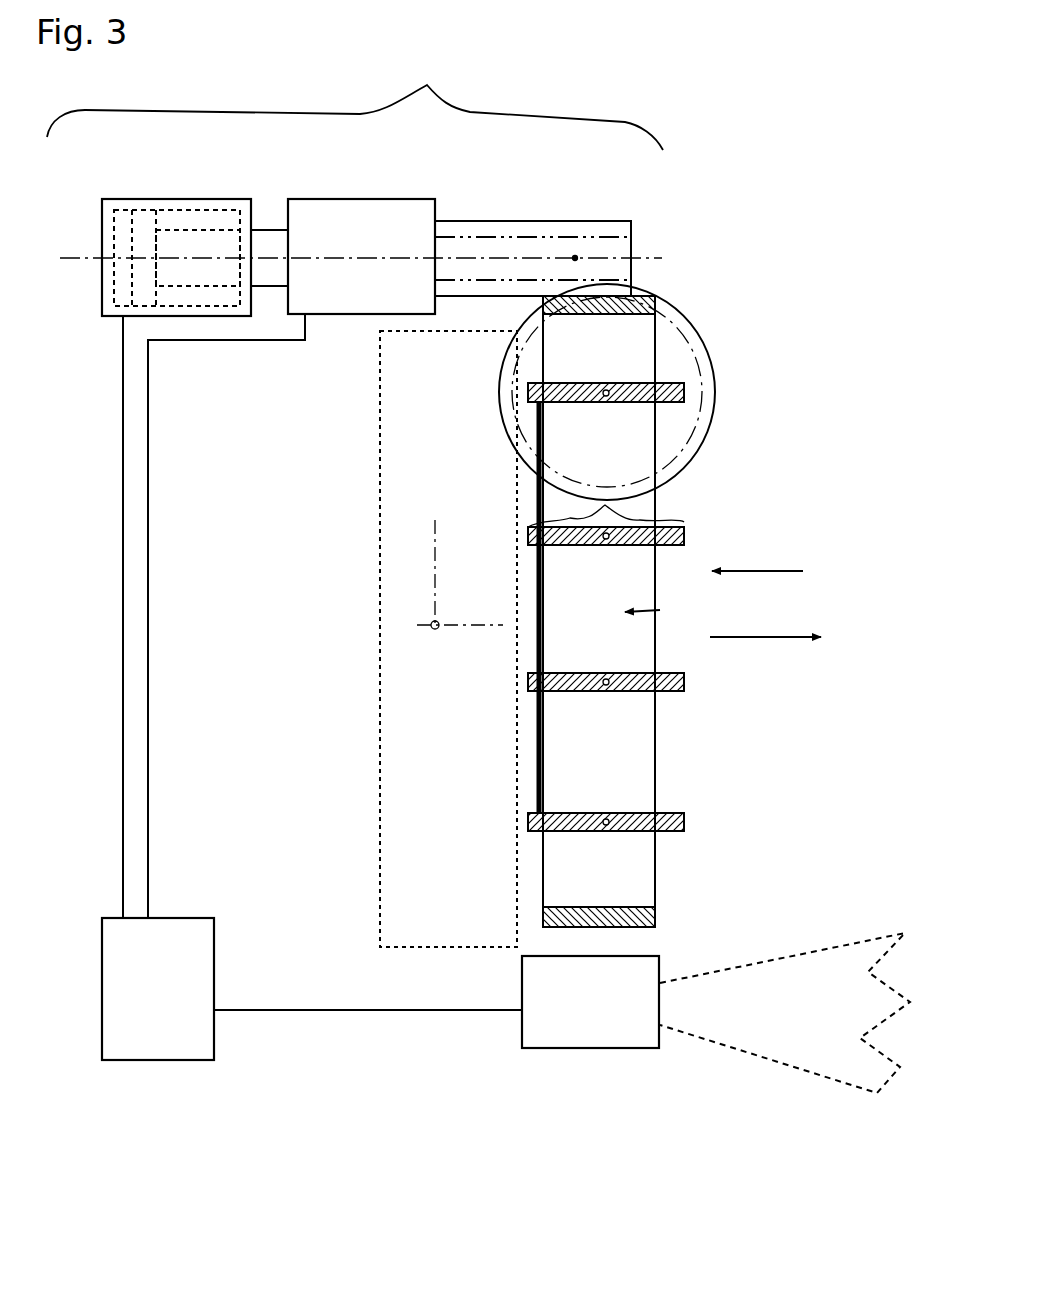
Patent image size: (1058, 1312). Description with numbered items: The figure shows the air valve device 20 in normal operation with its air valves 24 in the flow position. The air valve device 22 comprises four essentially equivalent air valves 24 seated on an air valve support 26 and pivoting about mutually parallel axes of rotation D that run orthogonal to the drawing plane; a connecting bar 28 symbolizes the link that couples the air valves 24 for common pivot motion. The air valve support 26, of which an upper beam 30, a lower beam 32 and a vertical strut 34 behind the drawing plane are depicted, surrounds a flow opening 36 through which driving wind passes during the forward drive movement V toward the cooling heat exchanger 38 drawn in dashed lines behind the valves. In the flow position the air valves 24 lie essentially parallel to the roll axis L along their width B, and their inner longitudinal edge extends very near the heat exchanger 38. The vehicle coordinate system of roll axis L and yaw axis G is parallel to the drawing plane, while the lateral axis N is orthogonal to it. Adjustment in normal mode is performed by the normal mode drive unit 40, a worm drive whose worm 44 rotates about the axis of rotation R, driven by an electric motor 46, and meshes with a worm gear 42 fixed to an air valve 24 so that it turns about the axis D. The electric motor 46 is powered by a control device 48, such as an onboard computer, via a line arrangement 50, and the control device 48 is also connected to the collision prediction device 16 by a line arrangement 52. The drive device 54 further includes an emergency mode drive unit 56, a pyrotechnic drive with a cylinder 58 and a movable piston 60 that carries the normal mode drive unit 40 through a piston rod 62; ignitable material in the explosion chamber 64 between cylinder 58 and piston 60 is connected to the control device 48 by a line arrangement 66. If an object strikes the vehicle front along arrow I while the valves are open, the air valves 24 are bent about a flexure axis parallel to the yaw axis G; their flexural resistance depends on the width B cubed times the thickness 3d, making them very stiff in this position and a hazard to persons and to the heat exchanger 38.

The collision prediction device 16 is at (604, 1023).
The air valve device 20 is at (416, 1136).
The air valve device 22 is at (695, 825).
The air valves 24 is at (568, 392).
The air valve support 26 is at (700, 522).
The connecting bar 28 is at (533, 598).
The upper beam 30 is at (640, 300).
The lower beam 32 is at (645, 912).
The vertical strut 34 is at (612, 784).
The flow opening 36 is at (661, 612).
The cooling heat exchanger 38 is at (385, 624).
The normal mode drive unit 40 is at (466, 206).
The worm gear 42 is at (680, 333).
The worm 44 is at (532, 247).
The electric motor 46 is at (378, 250).
The control device 48 is at (170, 1010).
The line arrangement 50 is at (150, 650).
The line arrangement 52 is at (328, 1013).
The drive device 54 is at (355, 100).
The emergency mode drive unit 56 is at (209, 196).
The cylinder 58 is at (102, 200).
The piston 60 is at (140, 230).
The piston rod 62 is at (262, 245).
The explosion chamber 64 is at (120, 290).
The line arrangement 66 is at (122, 605).
The thickness 3d is at (624, 684).
The axis of rotation R is at (575, 258).
The axis of rotation D is at (606, 393).
The width dimension B is at (606, 496).
The yaw axis G is at (437, 536).
The lateral axis N is at (435, 630).
The roll axis L is at (487, 624).
The impact direction arrow I is at (782, 567).
The forward drive movement V is at (768, 642).